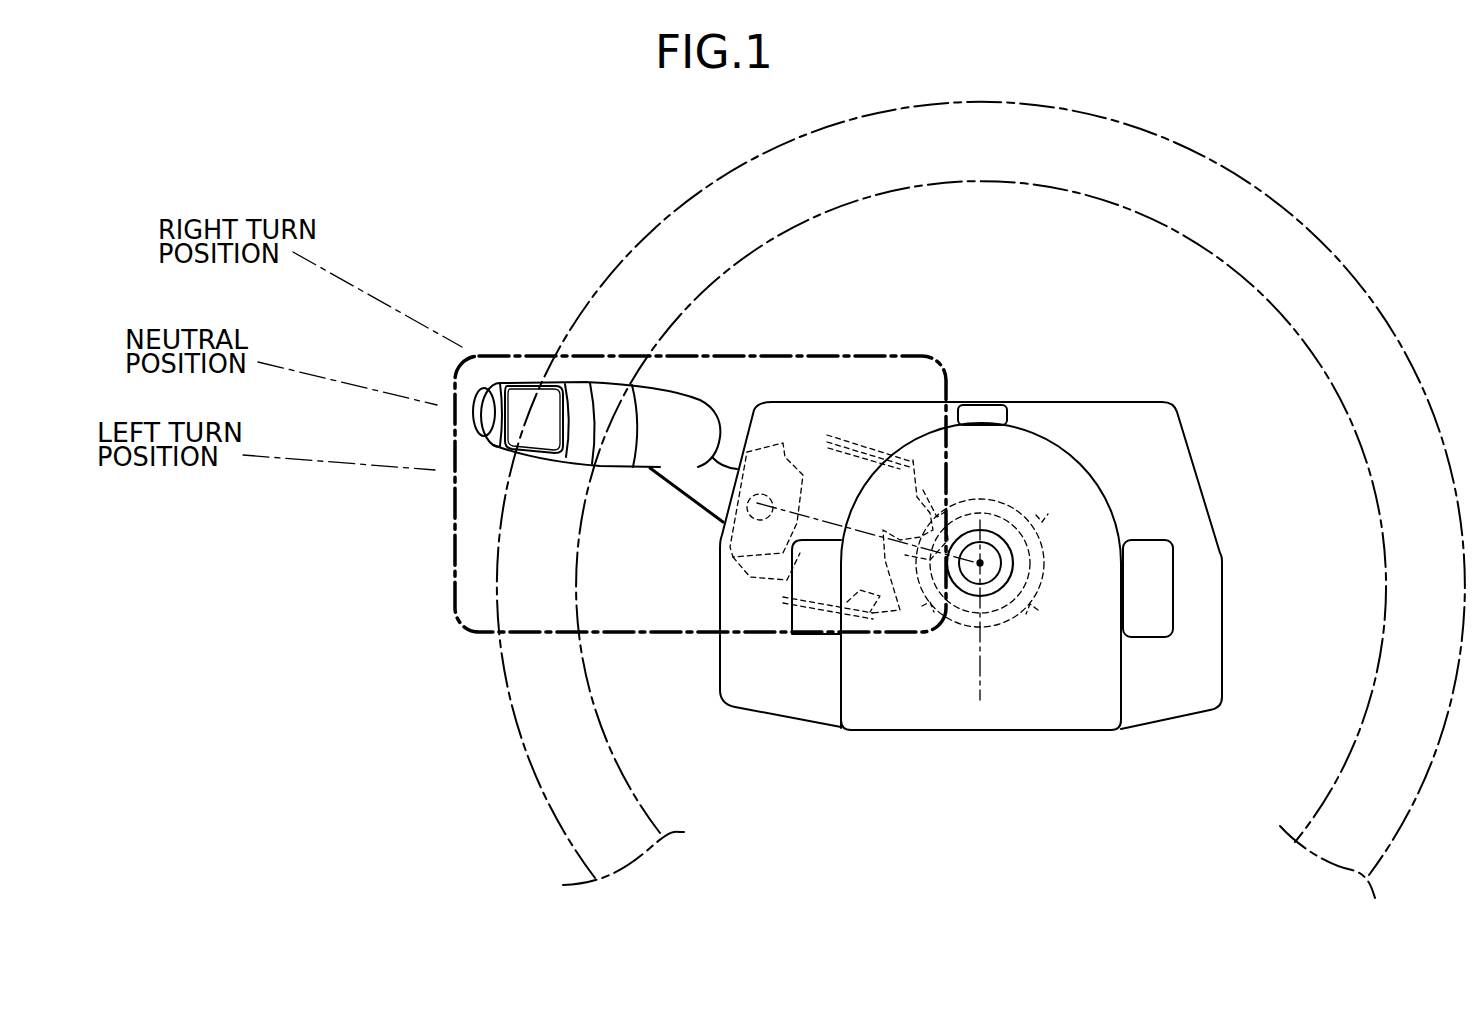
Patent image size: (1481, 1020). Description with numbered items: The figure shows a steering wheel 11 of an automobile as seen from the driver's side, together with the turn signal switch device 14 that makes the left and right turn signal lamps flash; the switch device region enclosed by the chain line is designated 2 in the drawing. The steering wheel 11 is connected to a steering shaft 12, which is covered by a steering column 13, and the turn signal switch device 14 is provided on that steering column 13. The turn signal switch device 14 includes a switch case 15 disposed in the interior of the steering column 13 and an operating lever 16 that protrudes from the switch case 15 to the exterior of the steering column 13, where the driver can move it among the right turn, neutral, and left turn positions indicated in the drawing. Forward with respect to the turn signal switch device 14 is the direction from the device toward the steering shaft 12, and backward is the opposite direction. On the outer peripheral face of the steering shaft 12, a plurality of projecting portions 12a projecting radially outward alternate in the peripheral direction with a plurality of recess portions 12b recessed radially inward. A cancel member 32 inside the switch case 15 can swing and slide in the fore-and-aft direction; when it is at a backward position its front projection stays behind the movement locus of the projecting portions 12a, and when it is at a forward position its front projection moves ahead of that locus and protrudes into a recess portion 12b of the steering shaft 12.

The turn signal switch device 2 is at (671, 521).
The steering wheel 11 is at (1362, 286).
The steering shaft 12 is at (999, 517).
The projecting portion 12a is at (1040, 512).
The recess portion 12b is at (937, 517).
The steering column 13 is at (1153, 694).
The turn signal switch device 14 is at (752, 372).
The switch case 15 is at (785, 592).
The operating lever 16 is at (580, 399).
The cancel member 32 is at (847, 602).